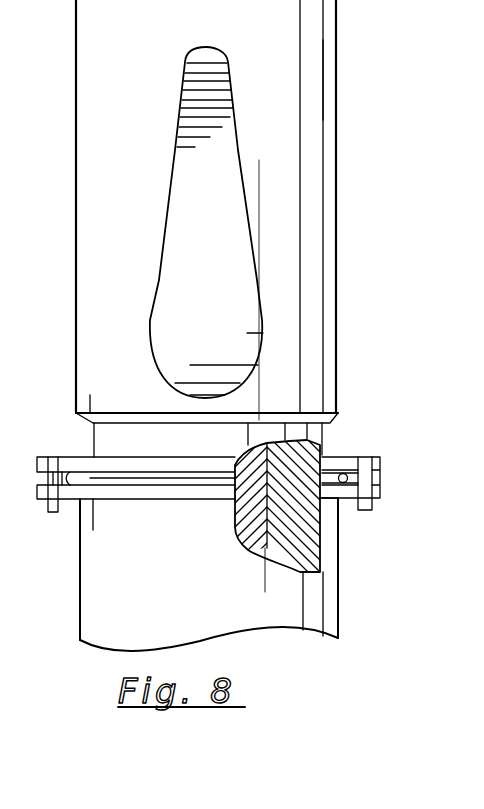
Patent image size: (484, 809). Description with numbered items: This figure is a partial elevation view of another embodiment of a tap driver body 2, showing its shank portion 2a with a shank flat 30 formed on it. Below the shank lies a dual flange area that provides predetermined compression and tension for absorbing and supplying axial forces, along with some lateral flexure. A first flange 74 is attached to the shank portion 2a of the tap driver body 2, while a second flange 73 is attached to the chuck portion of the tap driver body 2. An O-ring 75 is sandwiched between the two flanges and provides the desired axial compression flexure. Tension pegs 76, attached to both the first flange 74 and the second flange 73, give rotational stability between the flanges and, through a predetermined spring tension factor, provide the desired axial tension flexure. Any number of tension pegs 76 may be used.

The tap driver body 2 is at (48, 103).
The shank portion 2a is at (312, 79).
The shank flat 30 is at (203, 268).
The second flange 73 is at (204, 500).
The first flange 74 is at (158, 457).
The O-ring 75 is at (133, 481).
The tension pegs 76 is at (50, 506).